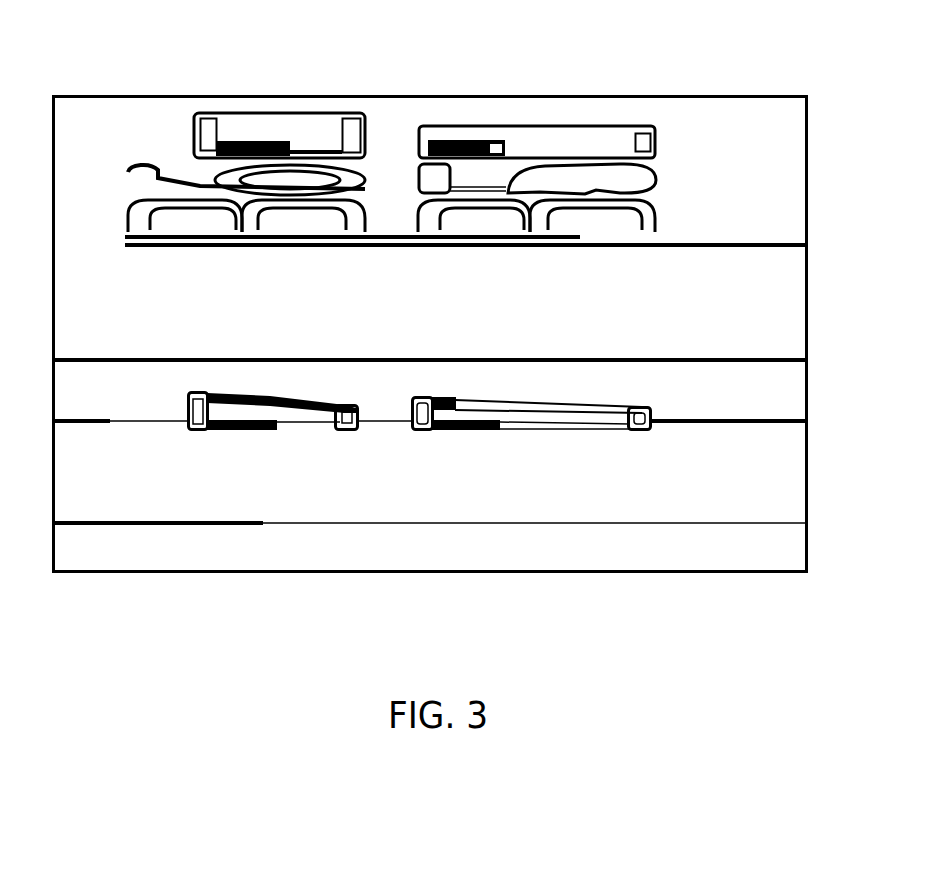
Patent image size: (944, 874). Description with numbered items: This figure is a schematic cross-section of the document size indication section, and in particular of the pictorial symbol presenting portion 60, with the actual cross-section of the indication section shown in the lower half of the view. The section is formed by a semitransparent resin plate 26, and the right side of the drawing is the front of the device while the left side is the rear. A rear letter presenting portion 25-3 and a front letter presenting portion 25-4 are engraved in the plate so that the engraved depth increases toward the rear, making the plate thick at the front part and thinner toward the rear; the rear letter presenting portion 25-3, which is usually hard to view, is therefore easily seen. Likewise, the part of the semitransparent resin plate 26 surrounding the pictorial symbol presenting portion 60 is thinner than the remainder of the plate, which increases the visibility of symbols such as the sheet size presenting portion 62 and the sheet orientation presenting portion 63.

The semitransparent resin plate 26 is at (765, 400).
The pictorial symbol presenting portion 60 is at (424, 255).
The sheet orientation presenting portion 63 is at (268, 112).
The sheet size presenting portion 62 is at (666, 180).
The rear letter presenting portion 25-3 is at (266, 395).
The front letter presenting portion 25-4 is at (510, 395).